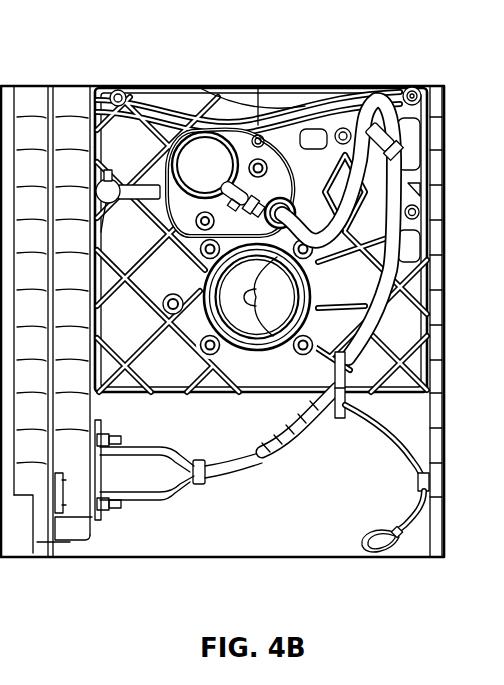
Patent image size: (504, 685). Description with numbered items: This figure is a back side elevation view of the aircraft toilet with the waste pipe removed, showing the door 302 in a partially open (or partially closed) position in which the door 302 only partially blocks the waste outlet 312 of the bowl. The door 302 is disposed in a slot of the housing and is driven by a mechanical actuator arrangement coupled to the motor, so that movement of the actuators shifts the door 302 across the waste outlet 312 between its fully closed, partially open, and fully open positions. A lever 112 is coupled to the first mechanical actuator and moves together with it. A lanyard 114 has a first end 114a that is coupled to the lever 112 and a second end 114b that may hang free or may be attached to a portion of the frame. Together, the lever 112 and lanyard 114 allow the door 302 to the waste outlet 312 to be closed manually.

The lever 112 is at (145, 190).
The lanyard 114 is at (370, 420).
The first end 114a is at (107, 172).
The second end 114b is at (383, 548).
The door 302 is at (283, 320).
The waste outlet 312 is at (190, 392).